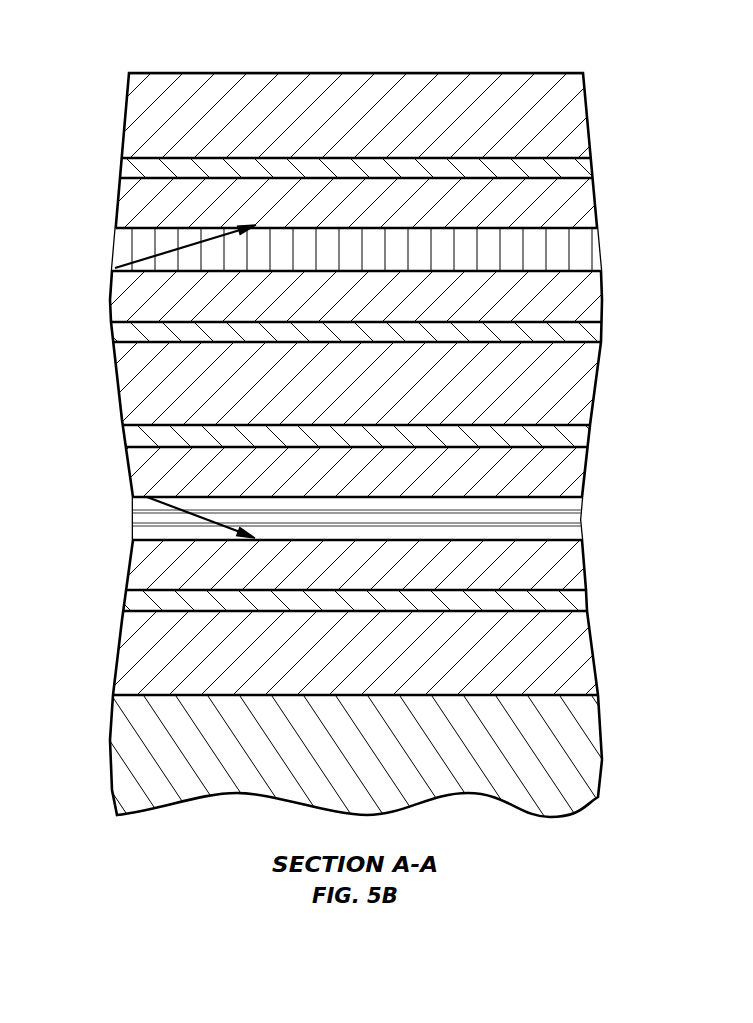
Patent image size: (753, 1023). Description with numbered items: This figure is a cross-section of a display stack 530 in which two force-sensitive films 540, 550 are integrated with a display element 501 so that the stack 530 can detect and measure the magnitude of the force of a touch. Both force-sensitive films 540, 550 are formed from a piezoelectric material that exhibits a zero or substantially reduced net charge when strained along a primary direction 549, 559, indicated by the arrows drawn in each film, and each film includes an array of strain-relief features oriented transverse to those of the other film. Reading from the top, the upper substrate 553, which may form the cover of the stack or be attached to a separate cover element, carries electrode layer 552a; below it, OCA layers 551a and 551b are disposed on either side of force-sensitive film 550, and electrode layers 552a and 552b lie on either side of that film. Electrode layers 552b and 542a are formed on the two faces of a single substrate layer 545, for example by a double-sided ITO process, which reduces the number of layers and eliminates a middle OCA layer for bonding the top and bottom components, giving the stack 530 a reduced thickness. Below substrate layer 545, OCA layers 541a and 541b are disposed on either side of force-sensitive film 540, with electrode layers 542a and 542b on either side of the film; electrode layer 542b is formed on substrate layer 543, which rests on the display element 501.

The stack 530 is at (105, 40).
The upper substrate 553 is at (589, 118).
The electrode layer 552a is at (591, 170).
The OCA layer 551a is at (594, 207).
The force-sensitive film 550 is at (598, 254).
The primary direction 559 is at (160, 254).
The OCA layer 551b is at (602, 300).
The electrode layer 552b is at (601, 335).
The substrate layer 545 is at (595, 386).
The electrode layer 542a is at (589, 440).
The OCA layer 541a is at (584, 475).
The force-sensitive film 540 is at (581, 520).
The primary direction 549 is at (168, 506).
The OCA layer 541b is at (584, 568).
The electrode layer 542b is at (587, 603).
The substrate layer 543 is at (594, 655).
The display element 501 is at (601, 740).